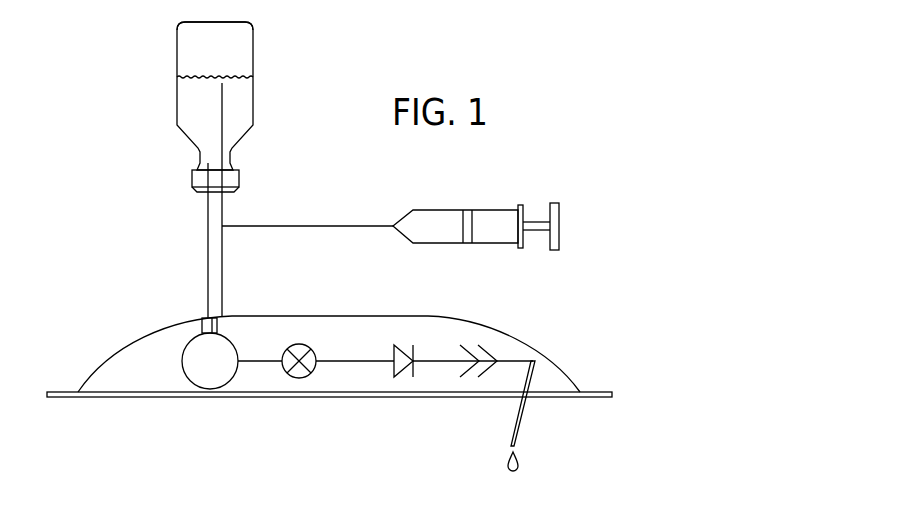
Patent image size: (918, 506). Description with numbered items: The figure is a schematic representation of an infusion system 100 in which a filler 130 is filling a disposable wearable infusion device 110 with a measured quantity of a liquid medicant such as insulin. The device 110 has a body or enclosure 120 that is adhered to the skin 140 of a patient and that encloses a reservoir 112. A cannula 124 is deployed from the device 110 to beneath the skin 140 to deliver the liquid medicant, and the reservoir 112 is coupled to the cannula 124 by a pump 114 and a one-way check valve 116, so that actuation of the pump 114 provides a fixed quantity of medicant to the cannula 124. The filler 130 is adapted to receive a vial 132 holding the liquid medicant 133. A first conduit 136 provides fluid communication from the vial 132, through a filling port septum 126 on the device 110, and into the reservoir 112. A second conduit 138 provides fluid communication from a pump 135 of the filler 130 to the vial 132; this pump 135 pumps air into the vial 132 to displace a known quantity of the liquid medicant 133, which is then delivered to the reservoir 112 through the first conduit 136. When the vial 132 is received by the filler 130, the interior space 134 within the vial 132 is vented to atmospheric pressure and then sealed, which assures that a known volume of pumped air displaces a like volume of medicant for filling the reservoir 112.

The system 100 is at (121, 210).
The disposable wearable infusion device 110 is at (117, 327).
The reservoir 112 is at (185, 378).
The pump 114 is at (293, 345).
The one-way check valve 116 is at (404, 350).
The body or enclosure 120 is at (100, 358).
The cannula 124 is at (522, 418).
The filling port septum 126 is at (203, 318).
The filler 130 is at (374, 212).
The vial 132 is at (255, 96).
The liquid medicant 133 is at (190, 100).
The interior space 134 is at (255, 40).
The pump 135 is at (453, 243).
The first conduit 136 is at (208, 250).
The second conduit 138 is at (245, 226).
The skin 140 is at (62, 391).